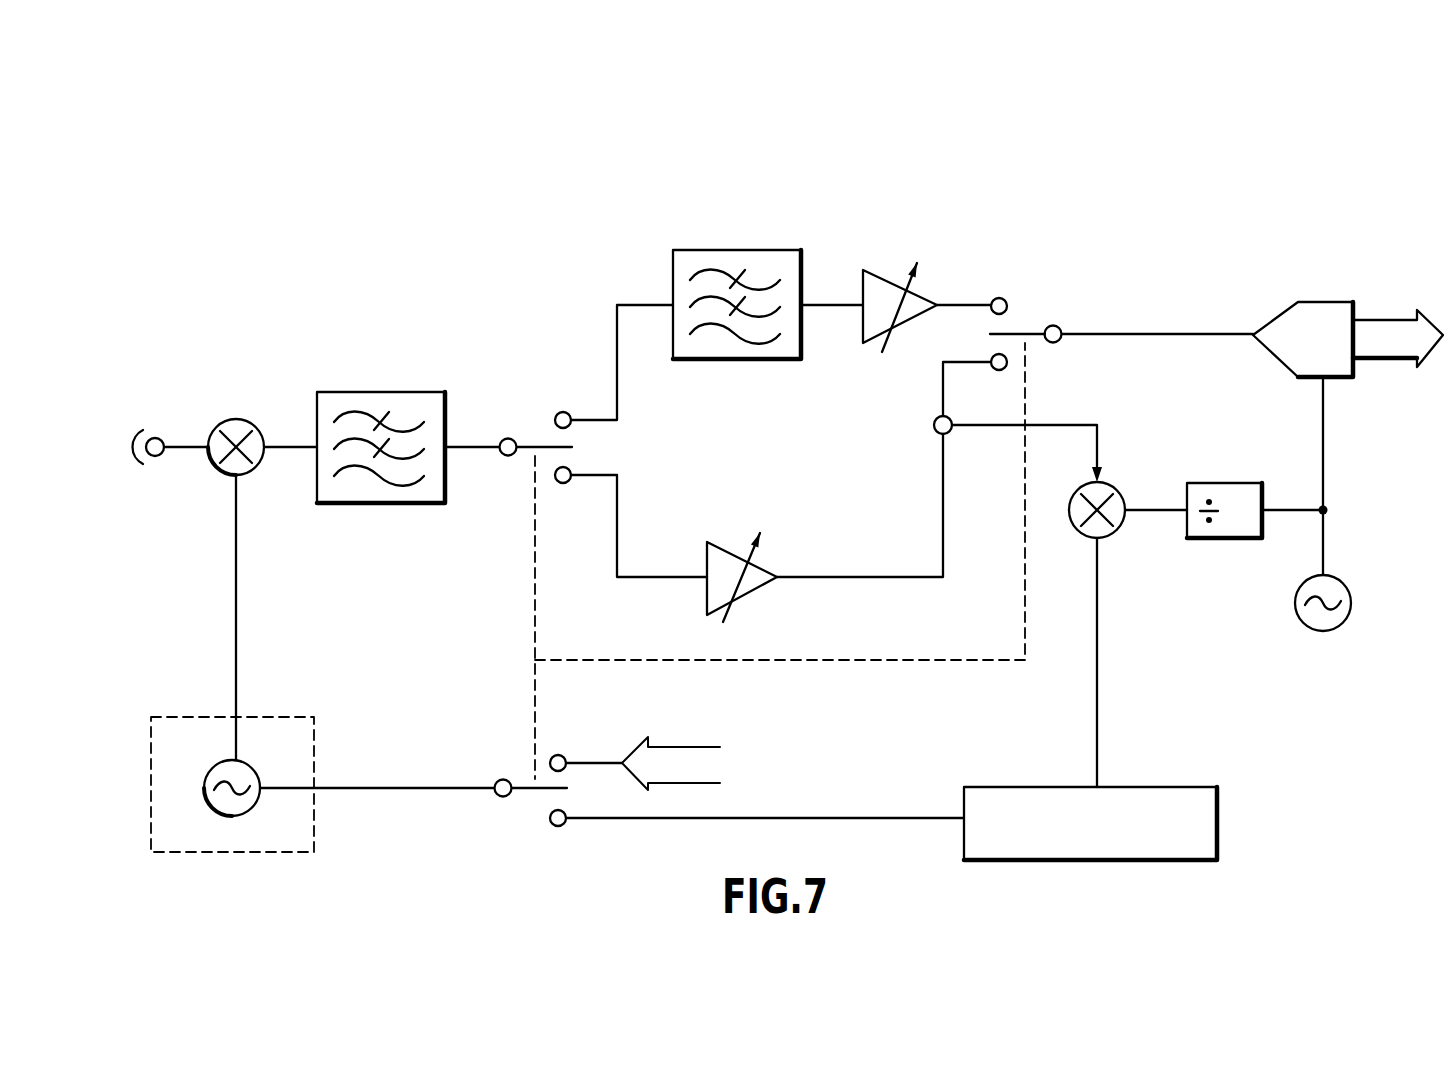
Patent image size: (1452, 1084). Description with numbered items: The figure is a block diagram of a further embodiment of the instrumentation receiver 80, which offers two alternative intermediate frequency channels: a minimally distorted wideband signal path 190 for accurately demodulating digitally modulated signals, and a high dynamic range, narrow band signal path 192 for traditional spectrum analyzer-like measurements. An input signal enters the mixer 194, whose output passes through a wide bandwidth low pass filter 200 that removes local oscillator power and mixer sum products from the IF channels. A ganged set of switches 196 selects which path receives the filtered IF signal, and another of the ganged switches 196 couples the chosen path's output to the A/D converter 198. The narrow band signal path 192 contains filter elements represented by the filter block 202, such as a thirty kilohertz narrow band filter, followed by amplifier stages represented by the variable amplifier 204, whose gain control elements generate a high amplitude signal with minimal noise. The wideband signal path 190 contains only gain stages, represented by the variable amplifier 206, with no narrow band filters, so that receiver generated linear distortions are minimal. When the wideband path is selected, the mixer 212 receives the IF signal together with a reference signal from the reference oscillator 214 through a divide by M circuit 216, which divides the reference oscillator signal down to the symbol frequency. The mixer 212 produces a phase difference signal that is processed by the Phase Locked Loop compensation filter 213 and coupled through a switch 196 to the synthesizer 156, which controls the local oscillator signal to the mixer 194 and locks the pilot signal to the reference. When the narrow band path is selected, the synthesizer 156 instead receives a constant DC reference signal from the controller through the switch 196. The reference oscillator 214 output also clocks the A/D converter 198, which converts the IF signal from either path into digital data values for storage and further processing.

The instrumentation receiver 80 is at (1135, 218).
The synthesizer 156 is at (283, 717).
The minimally distorted wideband signal path 190 is at (792, 538).
The high dynamic range, narrow band signal path 192 is at (828, 240).
The mixer 194 is at (237, 419).
The ganged set of switches 196 is at (536, 447).
The A/D converter 198 is at (1337, 302).
The wide bandwidth low pass filter 200 is at (410, 392).
The filter block 202 is at (712, 250).
The variable amplifier 204 is at (885, 280).
The variable amplifier 206 is at (727, 552).
The mixer 212 is at (1117, 490).
The Phase Locked Loop compensation filter 213 is at (1183, 787).
The reference oscillator 214 is at (1343, 583).
The divide by M circuit 216 is at (1233, 483).